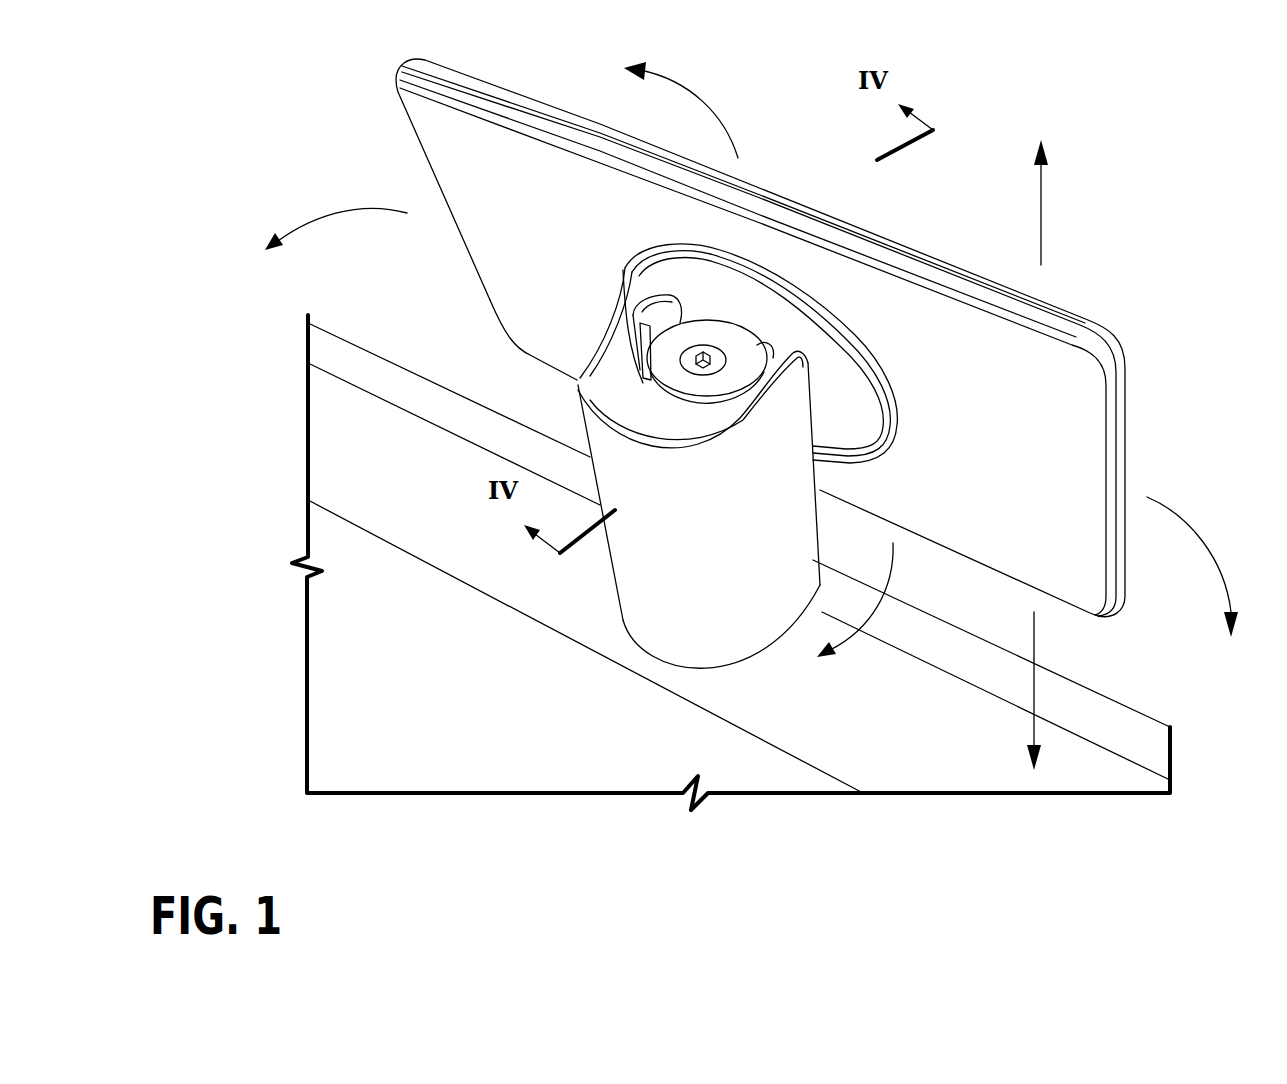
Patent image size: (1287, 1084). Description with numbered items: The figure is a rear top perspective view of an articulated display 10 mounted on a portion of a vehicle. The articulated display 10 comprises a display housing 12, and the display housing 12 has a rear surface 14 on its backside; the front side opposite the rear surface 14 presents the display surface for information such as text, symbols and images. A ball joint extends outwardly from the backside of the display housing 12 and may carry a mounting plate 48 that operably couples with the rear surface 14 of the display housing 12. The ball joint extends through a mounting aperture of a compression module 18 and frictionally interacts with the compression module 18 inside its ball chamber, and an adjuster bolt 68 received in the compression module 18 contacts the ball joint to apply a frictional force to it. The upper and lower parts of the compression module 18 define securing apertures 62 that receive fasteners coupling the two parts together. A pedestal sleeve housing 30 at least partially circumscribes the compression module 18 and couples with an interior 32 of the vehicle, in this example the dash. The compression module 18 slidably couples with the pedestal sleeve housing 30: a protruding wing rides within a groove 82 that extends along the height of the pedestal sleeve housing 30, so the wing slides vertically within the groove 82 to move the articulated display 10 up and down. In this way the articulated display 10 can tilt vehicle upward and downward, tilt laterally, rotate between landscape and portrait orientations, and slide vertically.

The articulated display 10 is at (1156, 282).
The display housing 12 is at (1120, 388).
The rear surface 14 is at (1077, 422).
The compression module 18 is at (743, 347).
The pedestal sleeve housing 30 is at (612, 393).
The interior 32 is at (358, 440).
The mounting plate 48 is at (723, 292).
The securing apertures 62 is at (638, 372).
The adjuster bolt 68 is at (706, 348).
The groove 82 is at (650, 300).